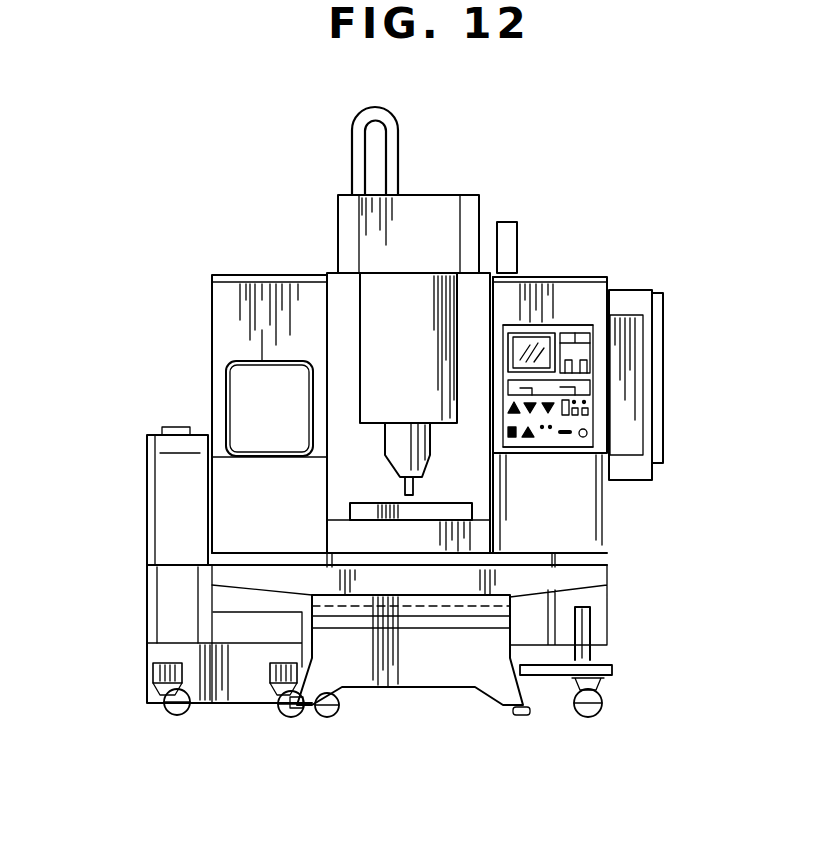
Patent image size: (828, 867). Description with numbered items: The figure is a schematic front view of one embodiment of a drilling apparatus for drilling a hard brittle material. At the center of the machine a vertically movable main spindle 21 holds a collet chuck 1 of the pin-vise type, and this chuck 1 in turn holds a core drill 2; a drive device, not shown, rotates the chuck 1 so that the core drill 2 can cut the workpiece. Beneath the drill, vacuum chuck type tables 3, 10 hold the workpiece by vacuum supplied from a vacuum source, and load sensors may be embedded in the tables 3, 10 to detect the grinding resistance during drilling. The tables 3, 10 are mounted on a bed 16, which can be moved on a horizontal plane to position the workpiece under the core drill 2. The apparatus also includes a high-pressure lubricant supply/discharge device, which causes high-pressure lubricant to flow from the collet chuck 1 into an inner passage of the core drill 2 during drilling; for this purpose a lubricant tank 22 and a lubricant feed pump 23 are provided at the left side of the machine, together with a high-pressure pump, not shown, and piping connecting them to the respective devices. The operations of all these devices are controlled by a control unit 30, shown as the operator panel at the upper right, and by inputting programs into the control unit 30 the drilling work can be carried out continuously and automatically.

The collet chuck 1 is at (425, 472).
The core drill 2 is at (422, 487).
The vacuum chuck type table 3 is at (380, 515).
The vacuum chuck type table 10 is at (429, 518).
The bed 16 is at (345, 540).
The main spindle 21 is at (382, 328).
The lubricant tank 22 is at (173, 655).
The lubricant feed pump 23 is at (167, 490).
The control unit 30 is at (568, 298).